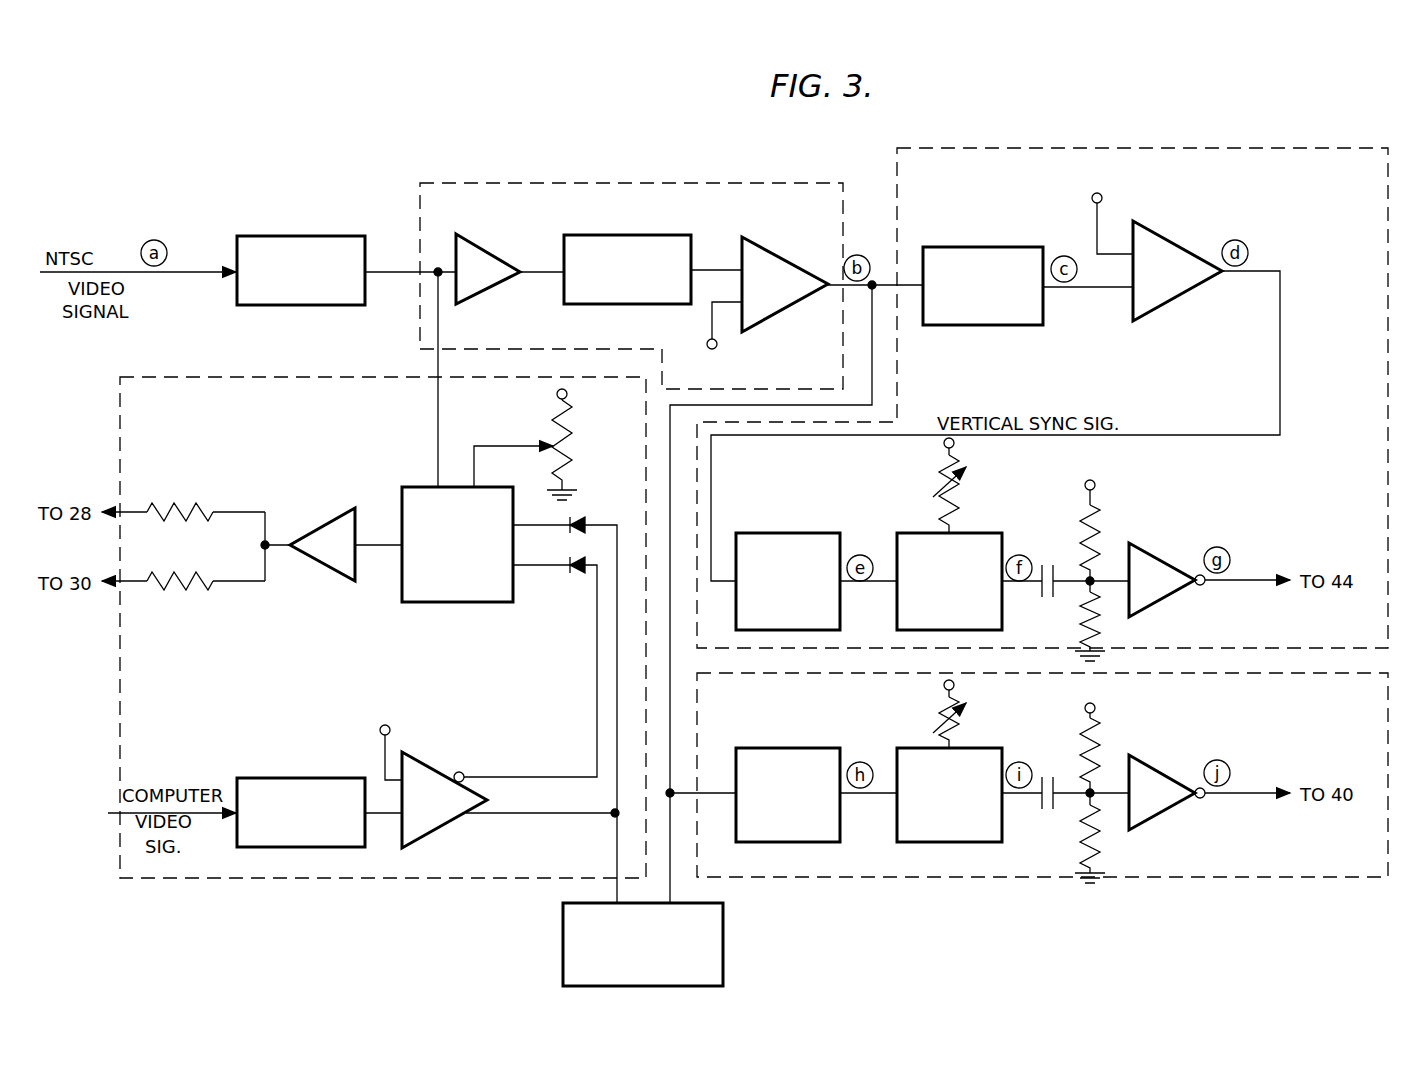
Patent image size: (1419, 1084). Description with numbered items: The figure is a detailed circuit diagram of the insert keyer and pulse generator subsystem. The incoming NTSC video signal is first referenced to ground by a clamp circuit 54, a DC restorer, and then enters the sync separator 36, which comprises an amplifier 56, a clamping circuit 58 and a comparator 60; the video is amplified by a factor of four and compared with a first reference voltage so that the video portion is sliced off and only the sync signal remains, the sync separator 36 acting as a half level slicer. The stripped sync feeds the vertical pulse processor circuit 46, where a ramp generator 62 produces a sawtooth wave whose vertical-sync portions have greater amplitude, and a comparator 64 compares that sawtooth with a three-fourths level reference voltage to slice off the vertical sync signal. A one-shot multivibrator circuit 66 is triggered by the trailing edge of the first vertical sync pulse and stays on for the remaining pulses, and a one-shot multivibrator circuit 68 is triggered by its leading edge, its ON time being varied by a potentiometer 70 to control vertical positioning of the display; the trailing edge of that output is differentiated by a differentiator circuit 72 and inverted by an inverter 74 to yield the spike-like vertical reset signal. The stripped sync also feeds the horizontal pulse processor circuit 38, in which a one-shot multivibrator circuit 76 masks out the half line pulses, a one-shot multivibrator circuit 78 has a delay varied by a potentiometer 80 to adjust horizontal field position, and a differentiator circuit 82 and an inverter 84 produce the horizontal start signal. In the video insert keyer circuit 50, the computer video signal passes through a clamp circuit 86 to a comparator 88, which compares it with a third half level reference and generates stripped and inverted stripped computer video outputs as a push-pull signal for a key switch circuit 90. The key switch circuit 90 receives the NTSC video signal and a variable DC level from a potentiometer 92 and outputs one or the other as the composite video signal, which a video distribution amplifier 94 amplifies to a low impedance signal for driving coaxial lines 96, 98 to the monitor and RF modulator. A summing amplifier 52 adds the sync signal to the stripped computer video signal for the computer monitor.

The sync separator 36 is at (613, 197).
The horizontal pulse processor circuit 38 is at (878, 868).
The vertical pulse processor circuit 46 is at (1305, 152).
The video insert keyer circuit 50 is at (315, 875).
The summing amplifier 52 is at (563, 948).
The clamp circuit 54 is at (338, 236).
The amplifier 56 is at (492, 254).
The clamping circuit 58 is at (655, 235).
The comparator 60 is at (783, 259).
The ramp generator 62 is at (940, 325).
The comparator 64 is at (1172, 299).
The one-shot multivibrator circuit 66 is at (797, 533).
The one-shot multivibrator circuit 68 is at (925, 532).
The potentiometer 70 is at (955, 508).
The differentiator circuit 72 is at (1076, 598).
The inverter 74 is at (1163, 560).
The one-shot multivibrator circuit 76 is at (790, 842).
The one-shot multivibrator circuit 78 is at (935, 842).
The potentiometer 80 is at (955, 740).
The differentiator circuit 82 is at (1076, 810).
The inverter 84 is at (1163, 773).
The clamp circuit 86 is at (313, 778).
The comparator 88 is at (448, 766).
The key switch circuit 90 is at (460, 602).
The potentiometer 92 is at (575, 432).
The video distribution amplifier 94 is at (340, 510).
The coaxial line 96 is at (130, 512).
The coaxial line 98 is at (135, 583).